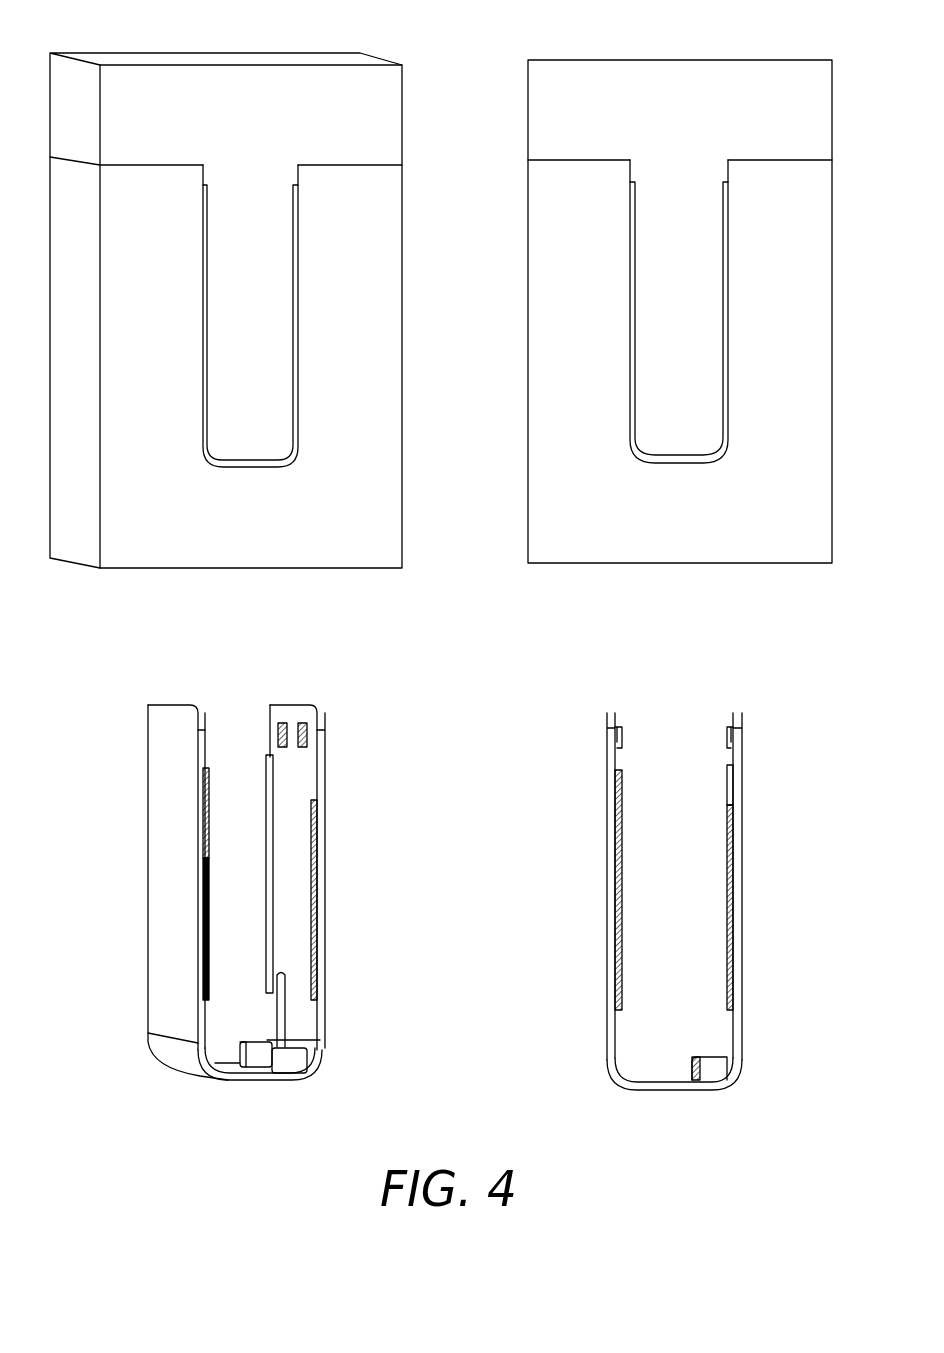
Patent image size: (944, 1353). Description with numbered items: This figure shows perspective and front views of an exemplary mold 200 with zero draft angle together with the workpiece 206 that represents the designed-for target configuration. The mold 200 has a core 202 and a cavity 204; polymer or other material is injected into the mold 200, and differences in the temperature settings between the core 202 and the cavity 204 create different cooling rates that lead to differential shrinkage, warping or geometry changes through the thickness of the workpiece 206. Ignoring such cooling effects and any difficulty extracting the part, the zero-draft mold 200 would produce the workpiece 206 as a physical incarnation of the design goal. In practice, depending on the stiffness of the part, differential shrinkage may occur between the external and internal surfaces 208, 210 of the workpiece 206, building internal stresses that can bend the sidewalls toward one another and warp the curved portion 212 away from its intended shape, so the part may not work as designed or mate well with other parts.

The mold 200 is at (244, 40).
The core 202 is at (390, 103).
The cavity 204 is at (390, 293).
The workpiece 206 is at (91, 905).
The external surface 208 is at (163, 787).
The internal surface 210 is at (283, 773).
The curved portion 212 is at (267, 1082).